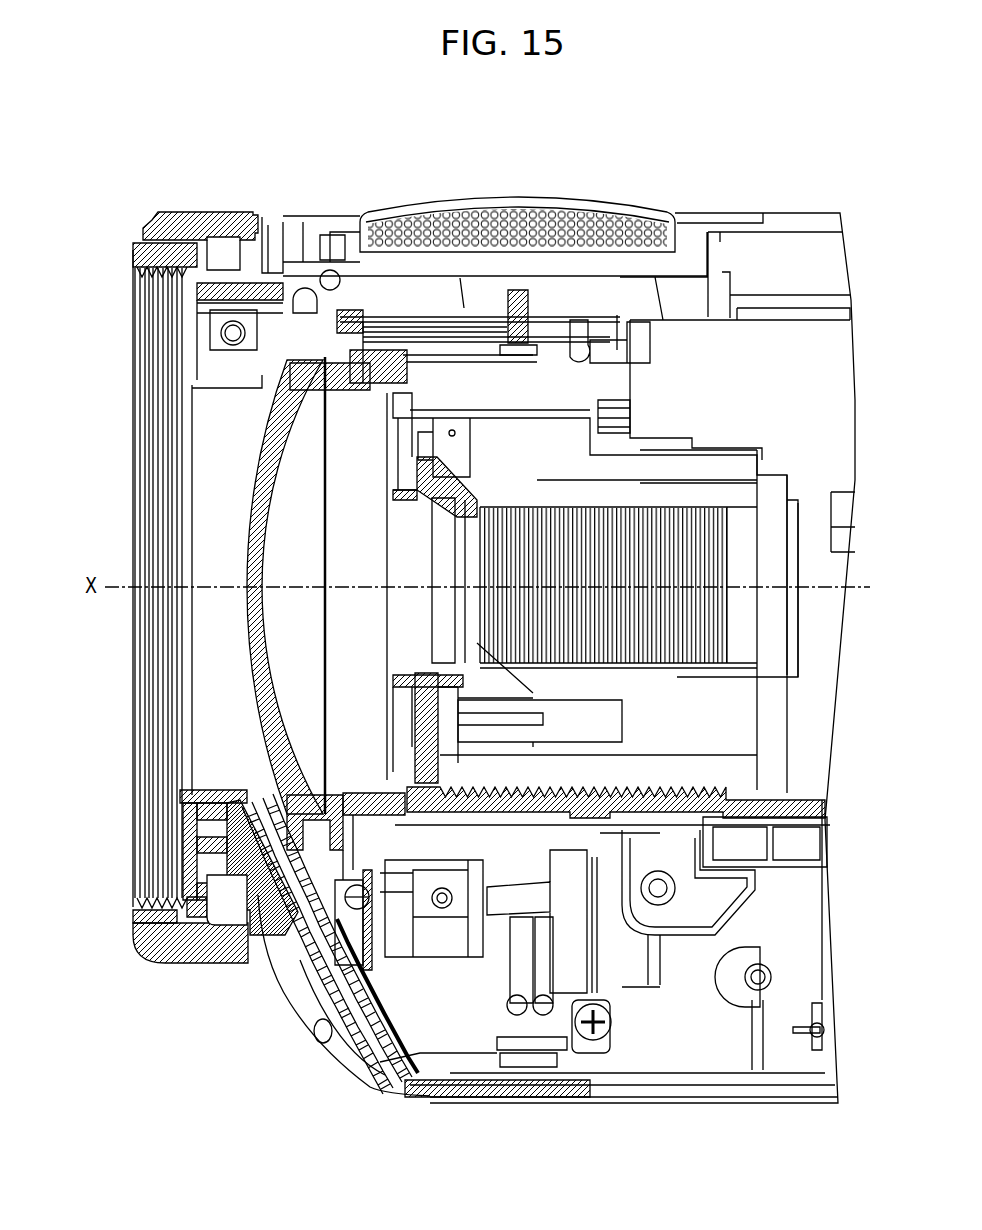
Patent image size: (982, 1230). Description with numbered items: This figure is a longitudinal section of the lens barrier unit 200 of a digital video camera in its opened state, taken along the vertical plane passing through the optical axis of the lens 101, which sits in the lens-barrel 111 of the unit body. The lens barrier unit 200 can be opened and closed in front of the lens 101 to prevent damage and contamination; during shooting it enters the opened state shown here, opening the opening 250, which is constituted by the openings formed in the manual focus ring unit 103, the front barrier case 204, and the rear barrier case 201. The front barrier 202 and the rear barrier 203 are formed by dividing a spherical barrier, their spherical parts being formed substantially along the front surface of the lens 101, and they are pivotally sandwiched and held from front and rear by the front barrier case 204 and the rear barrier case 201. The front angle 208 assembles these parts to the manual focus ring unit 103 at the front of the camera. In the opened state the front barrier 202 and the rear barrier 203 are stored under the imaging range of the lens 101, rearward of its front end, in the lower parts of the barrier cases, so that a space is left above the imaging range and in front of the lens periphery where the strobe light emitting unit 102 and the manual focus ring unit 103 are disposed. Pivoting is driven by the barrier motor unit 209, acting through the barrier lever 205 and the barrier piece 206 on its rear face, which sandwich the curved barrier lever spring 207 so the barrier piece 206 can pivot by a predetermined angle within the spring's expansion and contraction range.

The lens 101 is at (272, 465).
The strobe light emitting unit 102 is at (230, 333).
The manual focus ring unit 103 is at (180, 240).
The lens-barrel 111 is at (337, 190).
The lens barrier unit 200 is at (264, 205).
The rear barrier case 201 is at (236, 930).
The front barrier 202 is at (215, 821).
The rear barrier 203 is at (235, 858).
The front barrier case 204 is at (133, 925).
The barrier lever 205 is at (283, 960).
The barrier piece 206 is at (357, 1035).
The barrier lever spring 207 is at (322, 988).
The front angle 208 is at (320, 800).
The barrier motor unit 209 is at (455, 935).
The opening 250 is at (238, 527).